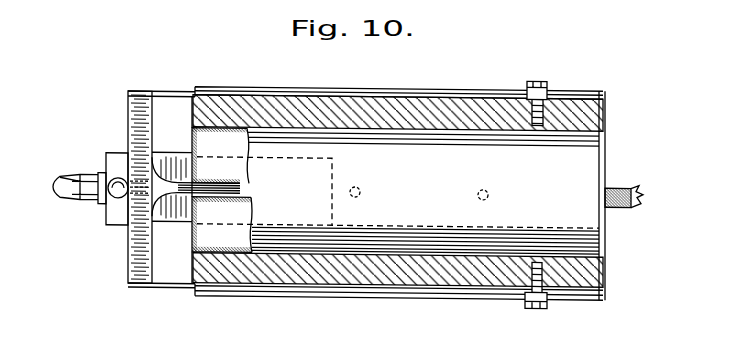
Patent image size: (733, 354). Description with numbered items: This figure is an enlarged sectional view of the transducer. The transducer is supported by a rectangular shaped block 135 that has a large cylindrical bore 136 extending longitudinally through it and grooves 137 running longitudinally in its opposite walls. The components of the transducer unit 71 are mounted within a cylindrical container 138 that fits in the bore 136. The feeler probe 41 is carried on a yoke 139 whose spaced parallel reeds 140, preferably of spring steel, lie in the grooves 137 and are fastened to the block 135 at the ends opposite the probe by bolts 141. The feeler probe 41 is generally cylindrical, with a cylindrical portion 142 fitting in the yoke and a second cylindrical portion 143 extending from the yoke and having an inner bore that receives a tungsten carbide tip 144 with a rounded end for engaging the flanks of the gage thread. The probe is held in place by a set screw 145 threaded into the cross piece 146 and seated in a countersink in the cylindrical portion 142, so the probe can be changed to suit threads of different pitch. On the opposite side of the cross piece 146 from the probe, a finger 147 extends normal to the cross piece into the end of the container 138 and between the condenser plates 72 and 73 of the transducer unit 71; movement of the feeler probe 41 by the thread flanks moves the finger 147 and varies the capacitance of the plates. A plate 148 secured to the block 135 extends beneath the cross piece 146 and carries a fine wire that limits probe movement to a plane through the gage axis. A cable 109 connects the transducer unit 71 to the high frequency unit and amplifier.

The feeler probe 41 is at (88, 179).
The transducer unit 71 is at (597, 158).
The condenser plate 72 is at (210, 177).
The condenser plate 73 is at (219, 209).
The cable 109 is at (628, 183).
The rectangular shaped block 135 is at (605, 276).
The cylindrical bore 136 is at (458, 131).
The grooves 137 is at (305, 93).
The cylindrical container 138 is at (378, 138).
The yoke 139 is at (165, 117).
The reeds 140 is at (340, 96).
The bolts 141 is at (545, 90).
The cylindrical portion 142 is at (135, 203).
The second cylindrical portion 143 is at (83, 208).
The tungsten carbide tip 144 is at (56, 197).
The set screw 145 is at (115, 155).
The cross piece 146 is at (135, 276).
The finger 147 is at (183, 183).
The plate 148 is at (177, 229).